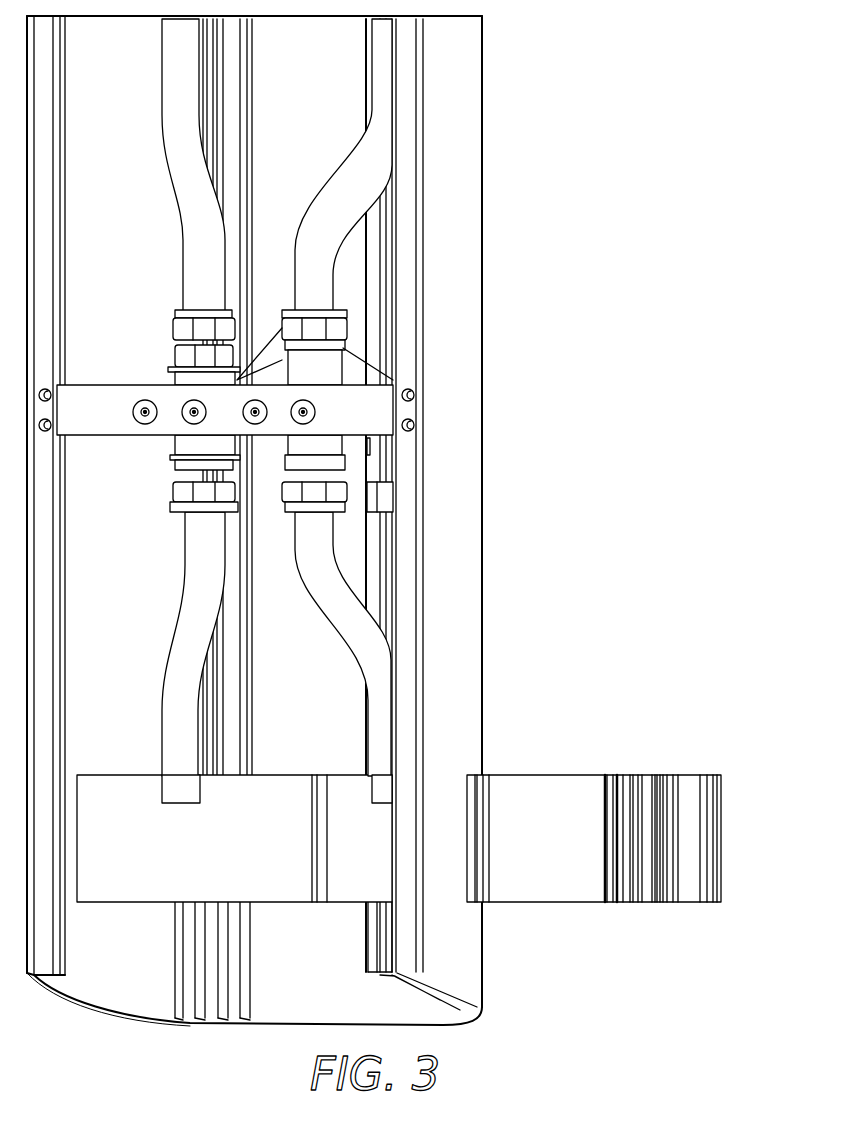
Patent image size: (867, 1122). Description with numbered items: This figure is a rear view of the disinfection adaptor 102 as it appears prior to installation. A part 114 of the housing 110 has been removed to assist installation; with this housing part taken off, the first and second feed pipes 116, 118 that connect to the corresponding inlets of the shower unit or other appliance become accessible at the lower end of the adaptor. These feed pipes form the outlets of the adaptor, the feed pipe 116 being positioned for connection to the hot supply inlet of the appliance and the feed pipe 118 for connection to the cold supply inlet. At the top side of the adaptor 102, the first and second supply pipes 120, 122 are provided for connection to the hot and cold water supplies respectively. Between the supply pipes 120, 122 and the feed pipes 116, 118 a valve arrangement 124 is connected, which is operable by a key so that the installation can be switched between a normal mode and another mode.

The disinfection adaptor 102 is at (532, 248).
The housing 110 is at (484, 665).
The housing part 114 is at (563, 775).
The first feed pipe 116 is at (378, 805).
The second feed pipe 118 is at (180, 805).
The first supply pipe 120 is at (378, 52).
The second supply pipe 122 is at (164, 52).
The valve arrangement 124 is at (156, 328).